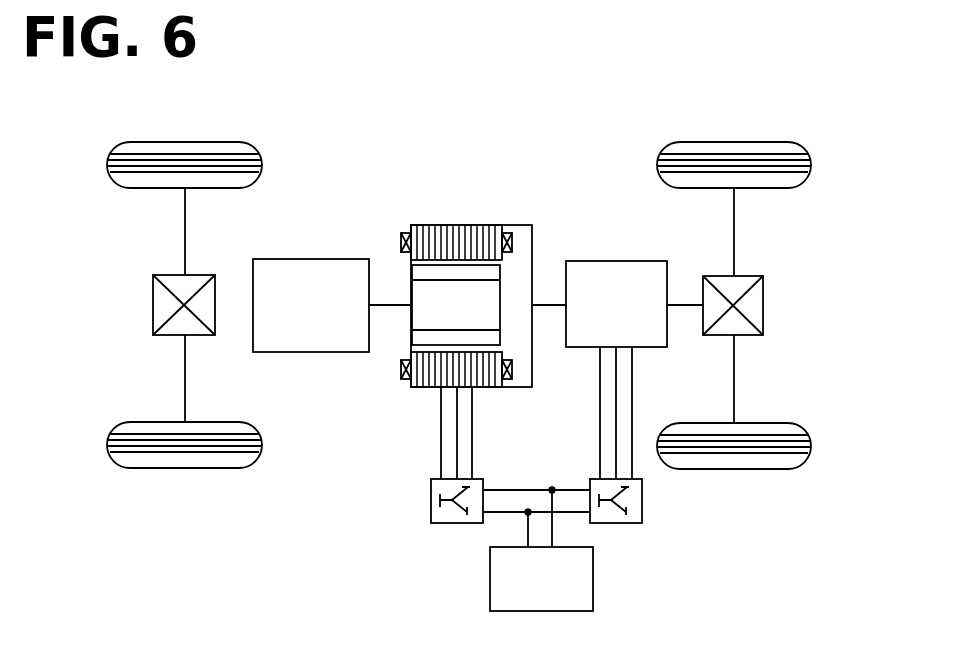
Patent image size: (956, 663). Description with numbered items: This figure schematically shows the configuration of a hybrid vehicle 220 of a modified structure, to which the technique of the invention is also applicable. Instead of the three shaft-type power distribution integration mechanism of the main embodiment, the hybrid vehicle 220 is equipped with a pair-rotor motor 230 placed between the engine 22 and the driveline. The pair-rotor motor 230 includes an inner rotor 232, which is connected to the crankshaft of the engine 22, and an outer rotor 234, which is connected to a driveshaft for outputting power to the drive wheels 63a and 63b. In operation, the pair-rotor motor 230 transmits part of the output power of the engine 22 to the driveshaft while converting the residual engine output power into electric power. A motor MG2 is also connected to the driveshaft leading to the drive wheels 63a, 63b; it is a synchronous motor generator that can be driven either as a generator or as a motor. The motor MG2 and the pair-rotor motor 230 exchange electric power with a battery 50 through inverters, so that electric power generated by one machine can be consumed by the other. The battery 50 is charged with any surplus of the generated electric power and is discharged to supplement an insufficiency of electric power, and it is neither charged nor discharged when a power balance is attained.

The engine 22 is at (312, 352).
The hybrid vehicle 220 is at (556, 148).
The pair-rotor motor 230 is at (443, 251).
The inner rotor 232 is at (410, 292).
The outer rotor 234 is at (458, 224).
The motor MG2 is at (617, 261).
The drive wheel 63a is at (733, 142).
The drive wheel 63b is at (737, 470).
The battery 50 is at (593, 575).